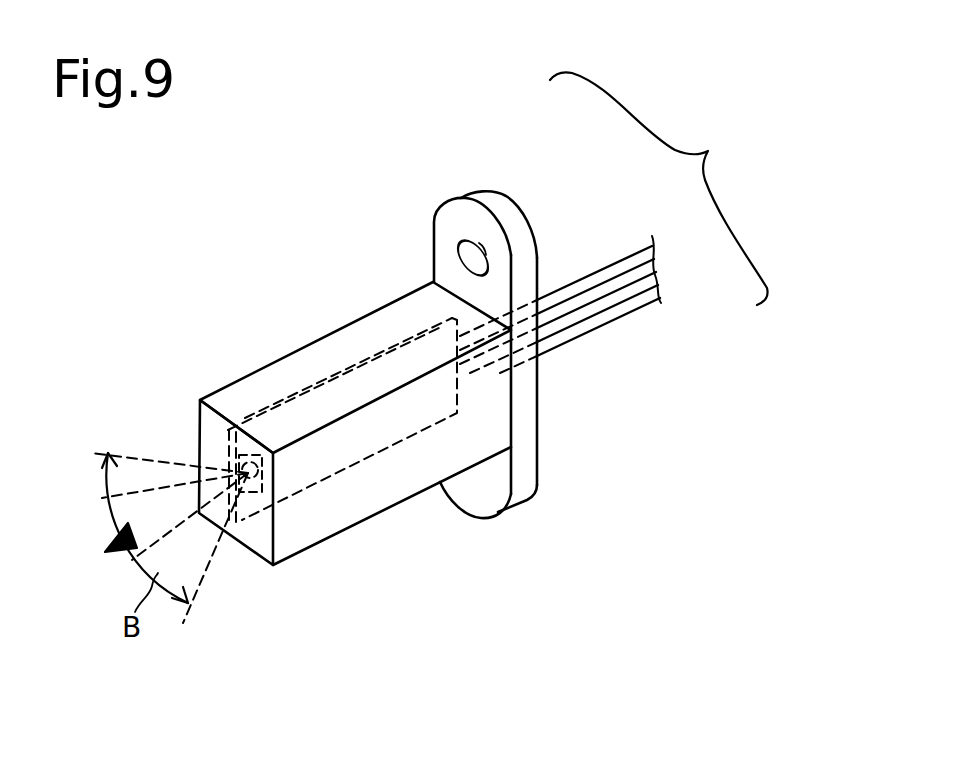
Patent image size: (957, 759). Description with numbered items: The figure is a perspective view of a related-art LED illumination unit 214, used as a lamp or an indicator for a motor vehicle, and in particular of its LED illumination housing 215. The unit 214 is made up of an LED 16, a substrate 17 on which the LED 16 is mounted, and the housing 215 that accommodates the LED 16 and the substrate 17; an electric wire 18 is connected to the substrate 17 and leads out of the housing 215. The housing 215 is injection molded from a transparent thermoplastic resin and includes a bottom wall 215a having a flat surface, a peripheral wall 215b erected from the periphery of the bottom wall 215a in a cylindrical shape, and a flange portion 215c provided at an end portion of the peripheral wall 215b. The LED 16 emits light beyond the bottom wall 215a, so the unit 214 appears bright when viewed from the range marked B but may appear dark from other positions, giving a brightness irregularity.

The LED 16 is at (262, 481).
The substrate 17 is at (383, 425).
The electric wire 18 is at (560, 334).
The LED illumination unit 214 is at (661, 188).
The LED illumination housing 215 is at (420, 406).
The bottom wall 215a is at (262, 538).
The peripheral wall 215b is at (310, 363).
The flange portion 215c is at (518, 243).